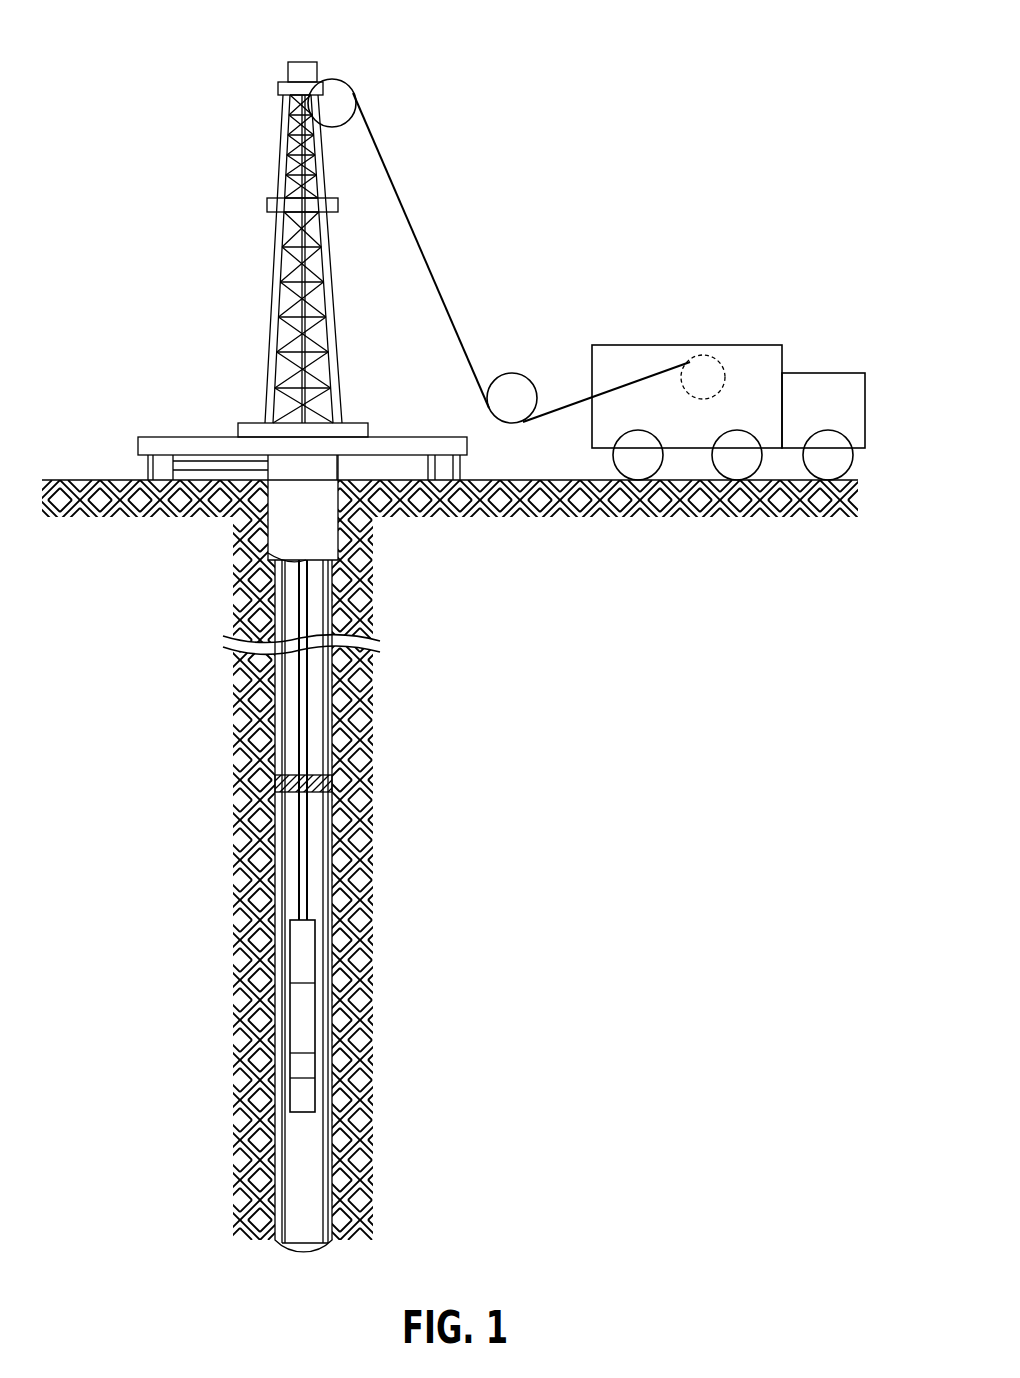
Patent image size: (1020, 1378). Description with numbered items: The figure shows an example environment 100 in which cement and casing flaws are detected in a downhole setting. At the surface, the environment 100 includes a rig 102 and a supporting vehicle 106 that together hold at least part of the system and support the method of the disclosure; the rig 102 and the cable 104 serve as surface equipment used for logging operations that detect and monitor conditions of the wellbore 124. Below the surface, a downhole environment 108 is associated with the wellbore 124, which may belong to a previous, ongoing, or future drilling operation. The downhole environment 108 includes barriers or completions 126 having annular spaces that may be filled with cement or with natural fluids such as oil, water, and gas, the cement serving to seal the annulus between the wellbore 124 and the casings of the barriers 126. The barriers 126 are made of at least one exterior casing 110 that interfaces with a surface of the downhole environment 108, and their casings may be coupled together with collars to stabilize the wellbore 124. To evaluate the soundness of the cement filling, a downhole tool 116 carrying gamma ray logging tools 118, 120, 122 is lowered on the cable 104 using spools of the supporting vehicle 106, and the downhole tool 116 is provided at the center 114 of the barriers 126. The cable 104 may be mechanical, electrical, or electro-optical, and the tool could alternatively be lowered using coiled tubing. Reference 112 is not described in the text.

The environment 100 is at (772, 57).
The rig 102 is at (337, 305).
The cable 104 is at (307, 738).
The supporting vehicle 106 is at (728, 412).
The downhole environment 108 is at (712, 812).
The exterior casing 110 is at (283, 838).
The wellbore 112 is at (337, 952).
The center 114 is at (320, 843).
The downhole tool 116 is at (374, 1047).
The gamma ray logging tool 118 is at (300, 1095).
The gamma ray logging tool 120 is at (298, 1060).
The gamma ray logging tool 122 is at (300, 1015).
The wellbore 124 is at (262, 760).
The barriers or completions 126 is at (240, 606).